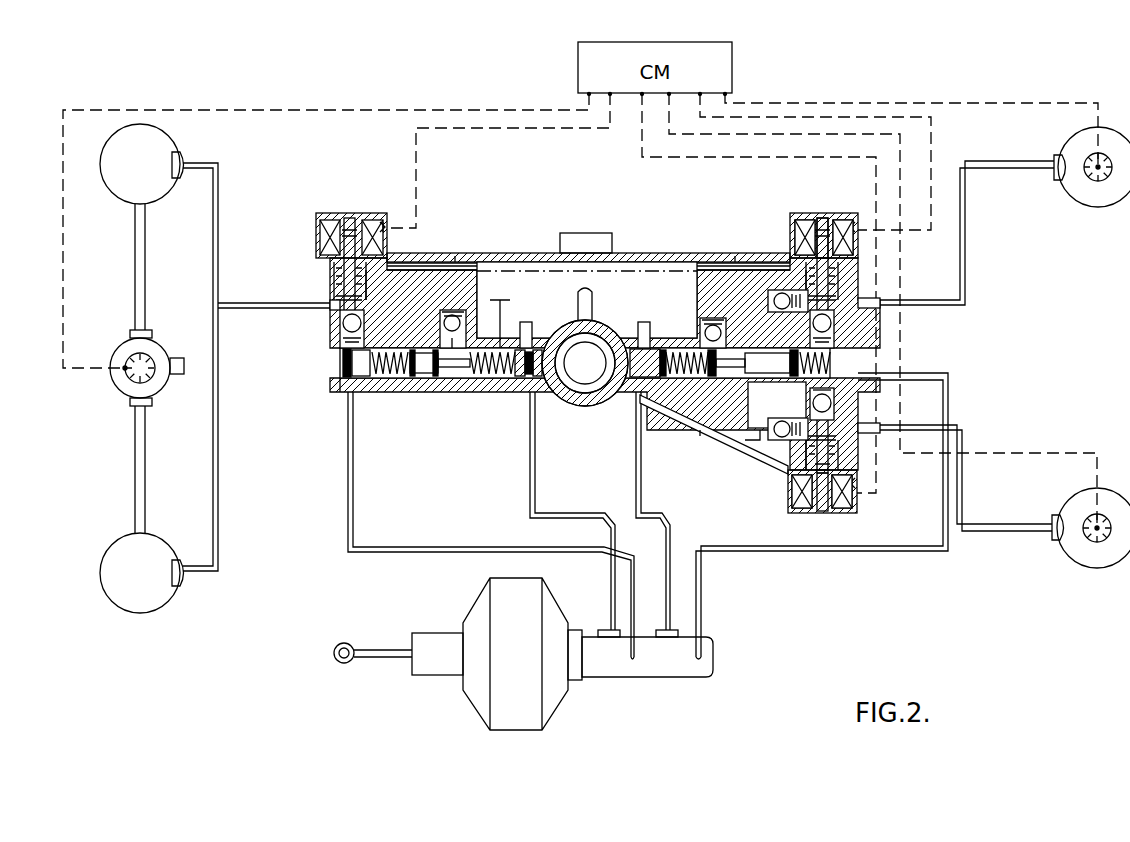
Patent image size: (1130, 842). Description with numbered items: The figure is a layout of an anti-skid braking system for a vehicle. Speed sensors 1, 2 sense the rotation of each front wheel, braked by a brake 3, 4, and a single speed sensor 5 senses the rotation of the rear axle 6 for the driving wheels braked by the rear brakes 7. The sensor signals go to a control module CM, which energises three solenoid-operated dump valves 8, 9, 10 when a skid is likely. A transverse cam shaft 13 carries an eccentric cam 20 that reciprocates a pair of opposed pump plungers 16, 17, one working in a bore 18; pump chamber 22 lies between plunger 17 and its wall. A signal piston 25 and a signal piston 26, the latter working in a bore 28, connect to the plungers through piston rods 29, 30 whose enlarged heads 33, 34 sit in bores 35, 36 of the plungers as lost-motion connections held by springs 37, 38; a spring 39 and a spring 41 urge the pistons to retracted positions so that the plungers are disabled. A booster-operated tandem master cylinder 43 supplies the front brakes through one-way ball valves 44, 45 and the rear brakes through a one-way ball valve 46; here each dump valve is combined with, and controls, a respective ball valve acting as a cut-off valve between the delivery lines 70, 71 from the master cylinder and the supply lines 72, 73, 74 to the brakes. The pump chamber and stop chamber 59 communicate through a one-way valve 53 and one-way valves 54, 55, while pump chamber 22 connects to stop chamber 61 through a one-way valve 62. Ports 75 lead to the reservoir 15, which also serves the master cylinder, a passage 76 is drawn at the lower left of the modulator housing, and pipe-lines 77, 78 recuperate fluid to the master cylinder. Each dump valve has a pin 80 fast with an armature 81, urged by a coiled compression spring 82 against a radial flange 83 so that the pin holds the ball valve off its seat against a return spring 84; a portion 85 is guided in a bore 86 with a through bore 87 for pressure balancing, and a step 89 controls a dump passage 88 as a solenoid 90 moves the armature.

The speed sensor 1 is at (1088, 182).
The speed sensor 2 is at (1082, 514).
The front wheel brake 3 is at (1056, 176).
The front wheel brake 4 is at (1053, 540).
The speed sensor 5 is at (128, 372).
The rear axle 6 is at (135, 272).
The rear brakes 7 is at (183, 160).
The solenoid-operated dump valve 8 is at (848, 216).
The solenoid-operated dump valve 9 is at (858, 510).
The solenoid-operated dump valve 10 is at (596, 359).
The cam shaft 13 is at (598, 398).
The reservoir 15 is at (660, 252).
The pump plunger 16 is at (585, 363).
The pump plunger 17 is at (526, 322).
The bore 18 is at (646, 396).
The eccentric cam 20 is at (568, 394).
The pump chamber 22 is at (450, 380).
The signal piston 25 is at (820, 366).
The signal piston 26 is at (348, 380).
The bore 28 is at (362, 380).
The piston rod 29 is at (680, 405).
The piston rod 30 is at (435, 380).
The enlarged head 33 is at (646, 324).
The enlarged head 34 is at (528, 380).
The bore 35 is at (665, 400).
The bore 36 is at (536, 380).
The spring 37 is at (722, 440).
The spring 38 is at (520, 380).
The spring 39 is at (777, 405).
The spring 41 is at (422, 380).
The tandem master cylinder assembly 43 is at (660, 676).
The one-way ball valve 44 is at (882, 312).
The one-way ball valve 45 is at (858, 428).
The one-way ball valve 46 is at (332, 312).
The one-way valve 53 is at (713, 262).
The one-way valve 54 is at (776, 294).
The one-way valve 55 is at (745, 445).
The stop chamber 59 is at (775, 420).
The stop chamber 61 is at (414, 380).
The one-way valve 62 is at (462, 318).
The delivery line 70 is at (880, 551).
The delivery line 71 is at (450, 552).
The supply line 72 is at (966, 234).
The supply line 73 is at (1000, 531).
The supply line 74 is at (250, 303).
The port 75 is at (492, 340).
The passage 76 is at (338, 380).
The pipe-line 77 is at (636, 500).
The pipe-line 78 is at (535, 500).
The pin 80 is at (335, 296).
The armature 81 is at (343, 255).
The coiled compression spring 82 is at (370, 268).
The radial flange 83 is at (410, 264).
The compression return spring 84 is at (340, 330).
The armature portion 85 is at (348, 220).
The bore 86 is at (336, 262).
The through bore 87 is at (351, 220).
The dump passage 88 is at (455, 256).
The step 89 is at (375, 222).
The solenoid 90 is at (330, 218).